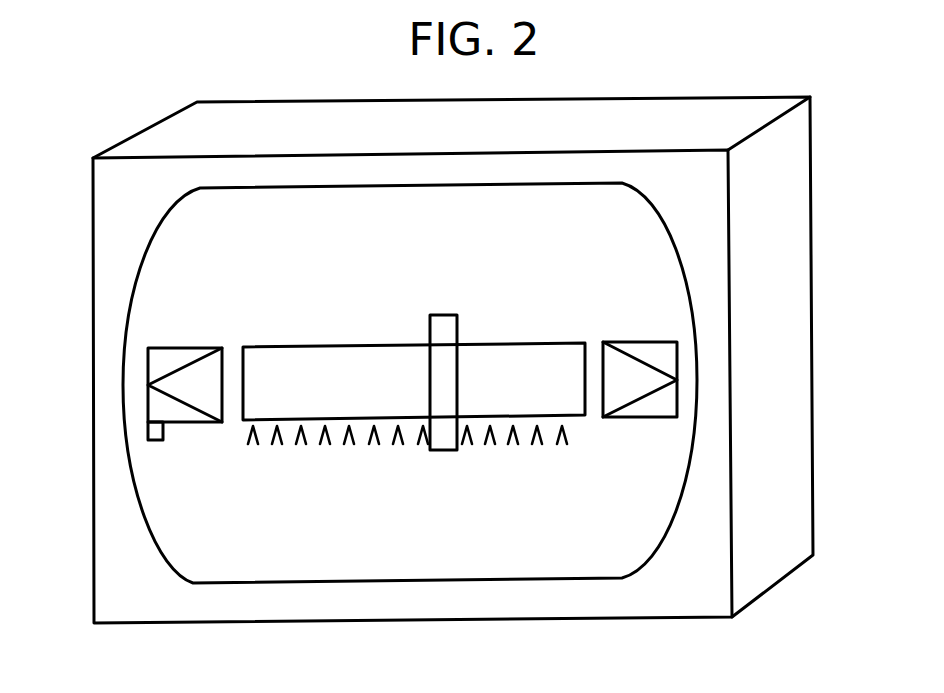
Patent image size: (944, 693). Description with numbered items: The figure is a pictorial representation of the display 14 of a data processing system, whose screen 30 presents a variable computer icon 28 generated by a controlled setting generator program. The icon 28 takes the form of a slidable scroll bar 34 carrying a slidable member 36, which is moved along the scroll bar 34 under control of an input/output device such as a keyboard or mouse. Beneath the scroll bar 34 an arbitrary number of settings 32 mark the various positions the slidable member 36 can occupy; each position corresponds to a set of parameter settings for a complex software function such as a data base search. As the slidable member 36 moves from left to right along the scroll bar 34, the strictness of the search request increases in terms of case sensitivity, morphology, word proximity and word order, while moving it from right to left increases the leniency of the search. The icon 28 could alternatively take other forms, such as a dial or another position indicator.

The display 14 is at (745, 95).
The variable computer icon 28 is at (312, 519).
The screen 30 is at (140, 255).
The settings 32 is at (252, 455).
The scroll bar 34 is at (560, 342).
The slidable member 36 is at (457, 318).